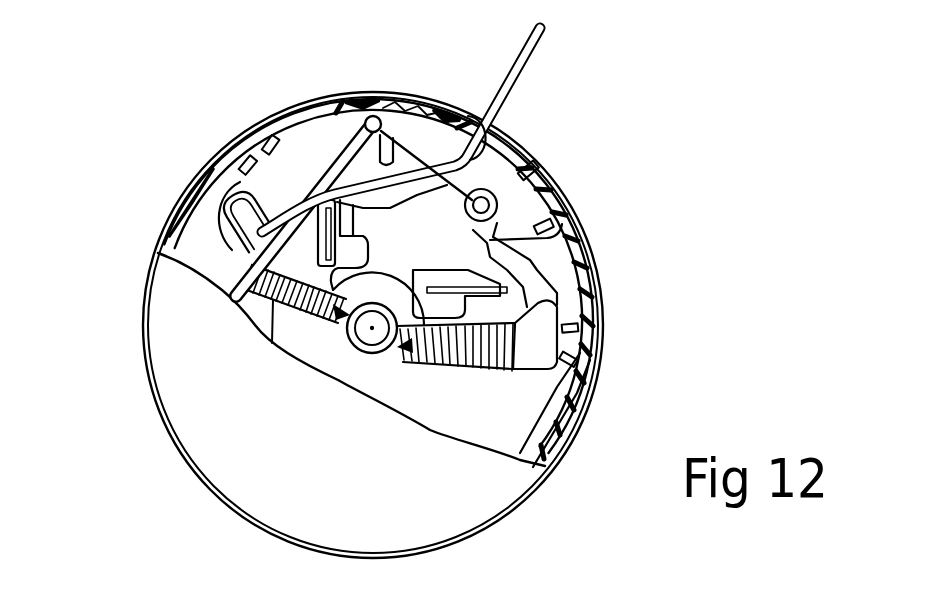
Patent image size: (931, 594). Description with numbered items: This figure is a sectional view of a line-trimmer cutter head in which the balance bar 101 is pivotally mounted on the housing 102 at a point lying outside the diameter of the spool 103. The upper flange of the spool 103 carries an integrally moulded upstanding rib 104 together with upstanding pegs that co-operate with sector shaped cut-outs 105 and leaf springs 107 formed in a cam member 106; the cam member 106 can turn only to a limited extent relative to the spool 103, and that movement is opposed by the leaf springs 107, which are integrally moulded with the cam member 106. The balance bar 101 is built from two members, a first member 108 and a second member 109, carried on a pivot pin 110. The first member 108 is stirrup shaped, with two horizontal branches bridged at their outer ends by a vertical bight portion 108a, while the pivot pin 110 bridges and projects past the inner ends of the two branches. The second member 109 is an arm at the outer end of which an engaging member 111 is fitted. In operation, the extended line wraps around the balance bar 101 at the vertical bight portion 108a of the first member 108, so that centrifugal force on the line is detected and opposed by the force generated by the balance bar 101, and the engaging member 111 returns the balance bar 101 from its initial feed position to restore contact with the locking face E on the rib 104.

The balance bar 101 is at (324, 134).
The housing 102 is at (590, 248).
The spool 103 is at (503, 418).
The upstanding rib 104 is at (578, 228).
The sector shaped cut-outs 105 is at (453, 280).
The cam member 106 is at (442, 210).
The leaf springs 107 is at (274, 336).
The first member 108 is at (315, 182).
The vertical bight portion 108a is at (240, 256).
The second member 109 is at (470, 198).
The pivot pin 110 is at (380, 118).
The engaging member 111 is at (533, 160).
The locking face E is at (538, 198).